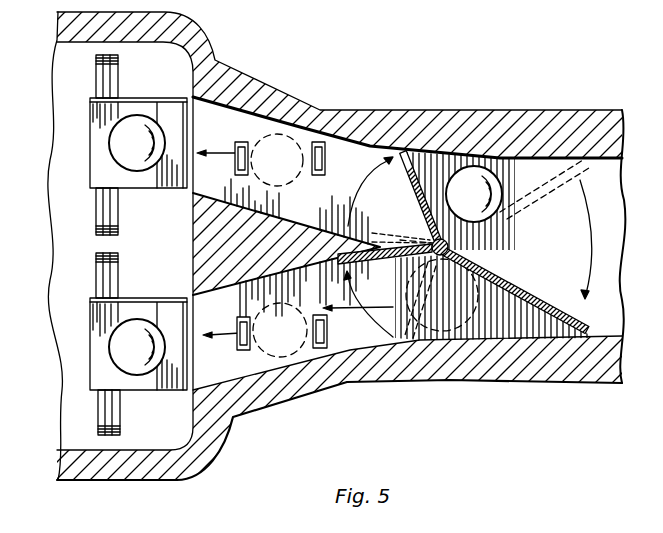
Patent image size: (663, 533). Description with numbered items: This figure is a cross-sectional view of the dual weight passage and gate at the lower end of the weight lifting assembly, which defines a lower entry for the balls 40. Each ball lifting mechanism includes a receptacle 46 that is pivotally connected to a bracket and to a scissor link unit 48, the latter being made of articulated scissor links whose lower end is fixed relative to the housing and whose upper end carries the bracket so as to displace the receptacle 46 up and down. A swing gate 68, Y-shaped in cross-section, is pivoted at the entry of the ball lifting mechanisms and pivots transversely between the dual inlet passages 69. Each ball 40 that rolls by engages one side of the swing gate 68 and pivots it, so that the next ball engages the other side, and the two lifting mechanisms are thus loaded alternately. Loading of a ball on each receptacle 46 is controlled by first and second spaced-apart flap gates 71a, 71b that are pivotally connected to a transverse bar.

The ball 40 is at (130, 137).
The receptacle 46 is at (99, 168).
The scissor link unit 48 is at (97, 259).
The swing gate 68 is at (432, 158).
The dual inlet passages 69 is at (244, 124).
The first flap gate 71a is at (248, 165).
The second flap gate 71b is at (323, 163).